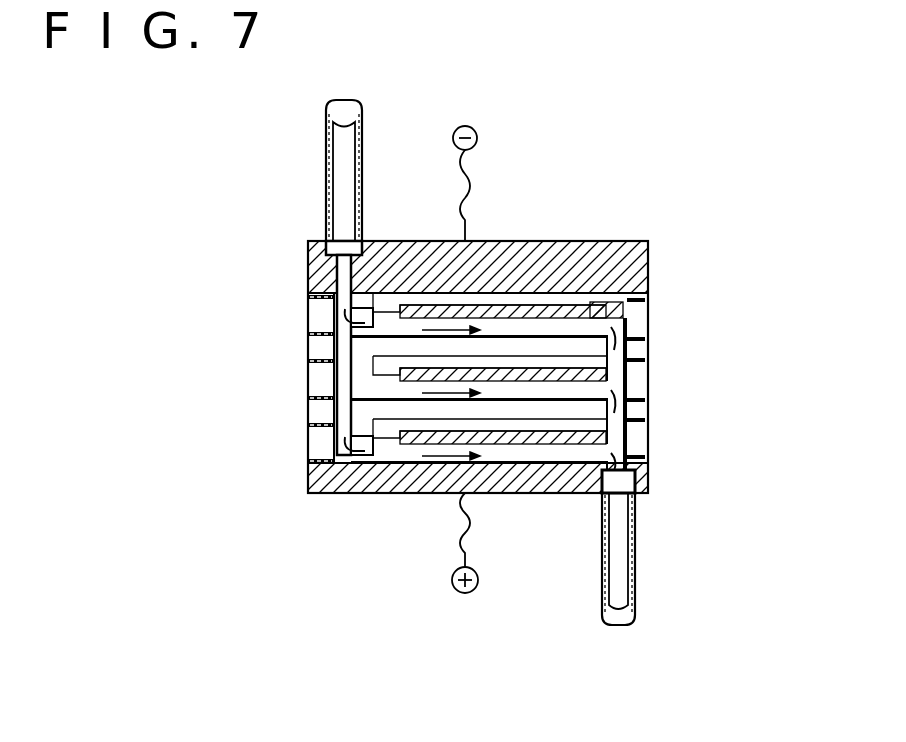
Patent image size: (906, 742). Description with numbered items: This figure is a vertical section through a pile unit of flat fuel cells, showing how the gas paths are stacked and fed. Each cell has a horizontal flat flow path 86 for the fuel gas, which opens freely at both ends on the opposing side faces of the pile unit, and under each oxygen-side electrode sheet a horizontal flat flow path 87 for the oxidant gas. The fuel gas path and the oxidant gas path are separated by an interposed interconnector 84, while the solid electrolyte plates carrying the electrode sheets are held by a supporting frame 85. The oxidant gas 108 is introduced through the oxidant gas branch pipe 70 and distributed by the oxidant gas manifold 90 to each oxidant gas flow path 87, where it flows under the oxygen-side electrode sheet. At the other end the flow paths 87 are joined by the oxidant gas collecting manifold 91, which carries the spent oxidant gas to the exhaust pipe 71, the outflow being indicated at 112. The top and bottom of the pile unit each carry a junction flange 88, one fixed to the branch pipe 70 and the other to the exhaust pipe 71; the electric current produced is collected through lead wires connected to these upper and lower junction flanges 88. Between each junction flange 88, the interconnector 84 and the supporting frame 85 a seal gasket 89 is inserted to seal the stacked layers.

The oxidant gas branch pipe 70 is at (327, 165).
The exhaust pipe 71 is at (636, 553).
The interconnector 84 is at (640, 347).
The supporting frame 85 is at (635, 316).
The horizontal flow path for the fuel gas 86 is at (410, 292).
The horizontal flat flow path for the oxidant gas 87 is at (522, 303).
The junction flange 88 is at (648, 268).
The seal gasket 89 is at (308, 362).
The oxidant gas manifold 90 is at (364, 262).
The oxidant gas collecting manifold 91 is at (600, 325).
The oxidant gas 108 is at (345, 62).
The outlet flow 112 is at (615, 630).